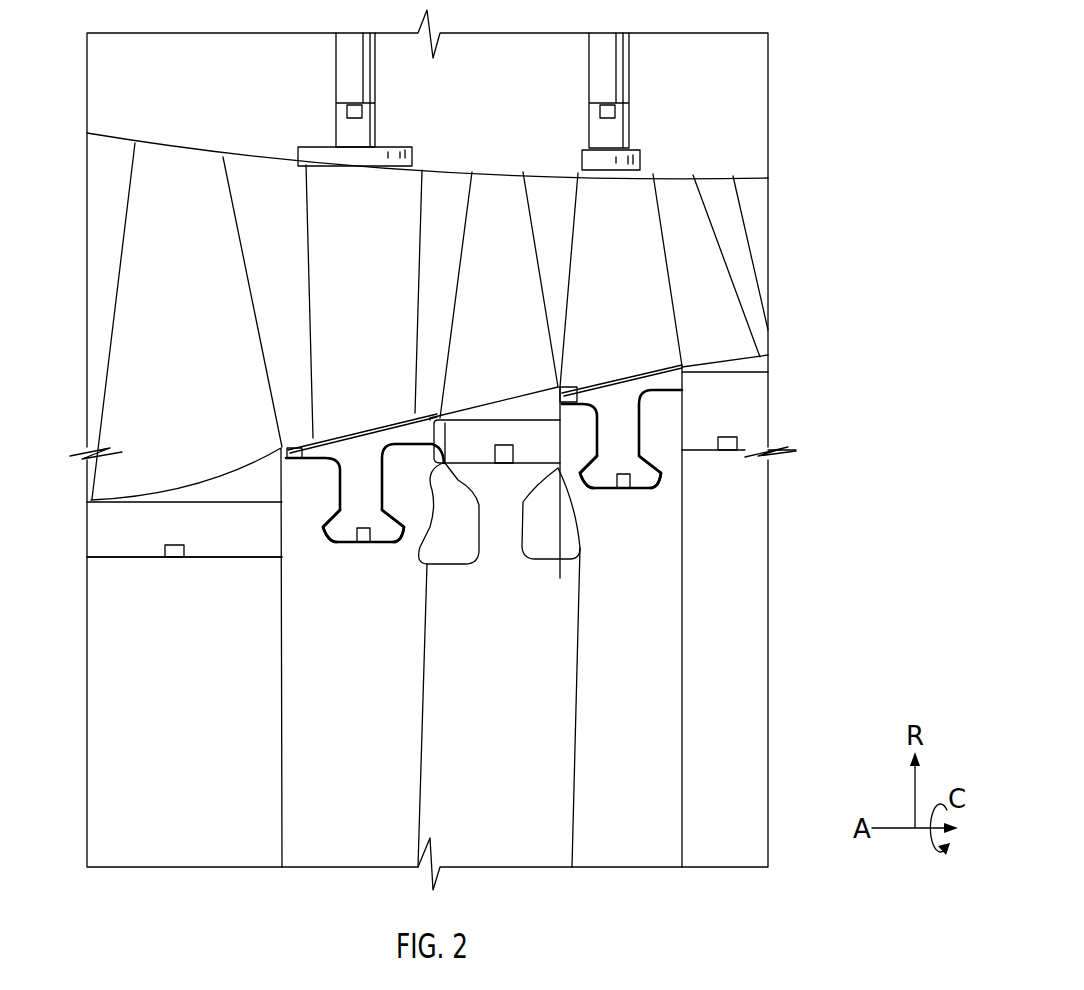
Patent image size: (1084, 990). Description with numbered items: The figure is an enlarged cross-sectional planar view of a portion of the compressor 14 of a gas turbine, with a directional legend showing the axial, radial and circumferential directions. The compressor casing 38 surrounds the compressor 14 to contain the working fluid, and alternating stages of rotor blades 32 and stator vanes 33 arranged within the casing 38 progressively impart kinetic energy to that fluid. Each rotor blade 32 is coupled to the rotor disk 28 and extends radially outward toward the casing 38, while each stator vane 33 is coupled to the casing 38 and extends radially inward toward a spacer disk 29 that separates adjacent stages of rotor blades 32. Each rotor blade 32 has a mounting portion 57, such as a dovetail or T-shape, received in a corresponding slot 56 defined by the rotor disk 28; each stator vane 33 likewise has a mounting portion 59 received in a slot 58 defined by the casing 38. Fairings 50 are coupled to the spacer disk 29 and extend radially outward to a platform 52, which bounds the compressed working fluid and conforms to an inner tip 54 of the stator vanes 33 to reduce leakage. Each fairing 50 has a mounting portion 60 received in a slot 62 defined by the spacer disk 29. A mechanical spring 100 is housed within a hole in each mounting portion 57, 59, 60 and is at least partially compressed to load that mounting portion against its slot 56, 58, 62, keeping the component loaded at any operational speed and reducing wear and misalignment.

The compressor 14 is at (811, 200).
The rotor disk 28 is at (164, 706).
The spacer disk 29 is at (342, 706).
The rotor blade 32 is at (164, 329).
The stator vane 33 is at (352, 317).
The compressor casing 38 is at (250, 132).
The fairing 50 is at (349, 489).
The platform 52 is at (295, 453).
The inner tip 54 is at (357, 430).
The slot 56 is at (212, 566).
The mounting portion 57 is at (105, 513).
The slot 58 is at (380, 92).
The mounting portion 59 is at (363, 132).
The mounting portion 60 is at (339, 533).
The slot 62 is at (390, 555).
The mechanical spring 100 is at (347, 110).